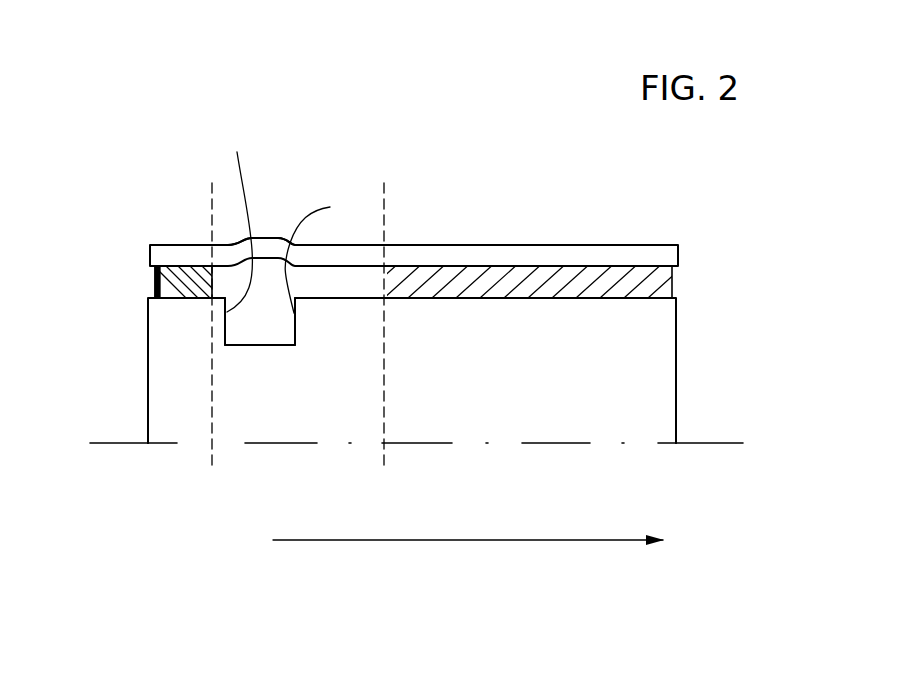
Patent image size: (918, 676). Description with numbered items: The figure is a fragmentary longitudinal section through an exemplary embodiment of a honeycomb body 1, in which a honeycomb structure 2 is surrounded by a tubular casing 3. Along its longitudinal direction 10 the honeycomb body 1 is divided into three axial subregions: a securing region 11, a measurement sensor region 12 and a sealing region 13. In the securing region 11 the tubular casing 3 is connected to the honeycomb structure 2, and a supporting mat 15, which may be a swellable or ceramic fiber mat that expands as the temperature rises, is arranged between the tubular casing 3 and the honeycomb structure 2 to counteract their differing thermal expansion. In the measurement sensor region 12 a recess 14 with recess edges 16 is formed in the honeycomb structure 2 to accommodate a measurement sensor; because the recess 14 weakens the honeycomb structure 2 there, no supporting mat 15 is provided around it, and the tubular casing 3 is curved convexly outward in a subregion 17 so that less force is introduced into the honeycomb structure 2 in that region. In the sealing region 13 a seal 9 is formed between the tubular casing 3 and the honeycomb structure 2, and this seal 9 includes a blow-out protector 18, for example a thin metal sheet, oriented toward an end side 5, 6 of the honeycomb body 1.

The honeycomb body 1 is at (702, 340).
The honeycomb structure 2 is at (650, 425).
The tubular casing 3 is at (518, 255).
The end side 5 is at (147, 415).
The end side 6 is at (678, 390).
The seal 9 is at (157, 270).
The longitudinal direction 10 is at (518, 542).
The securing region 11 is at (429, 211).
The measurement sensor region 12 is at (293, 198).
The sealing region 13 is at (194, 216).
The recess 14 is at (248, 332).
The supporting mat 15 is at (675, 285).
The recess edges 16 is at (294, 214).
The subregion 17 is at (265, 238).
The blow-out protector 18 is at (153, 290).